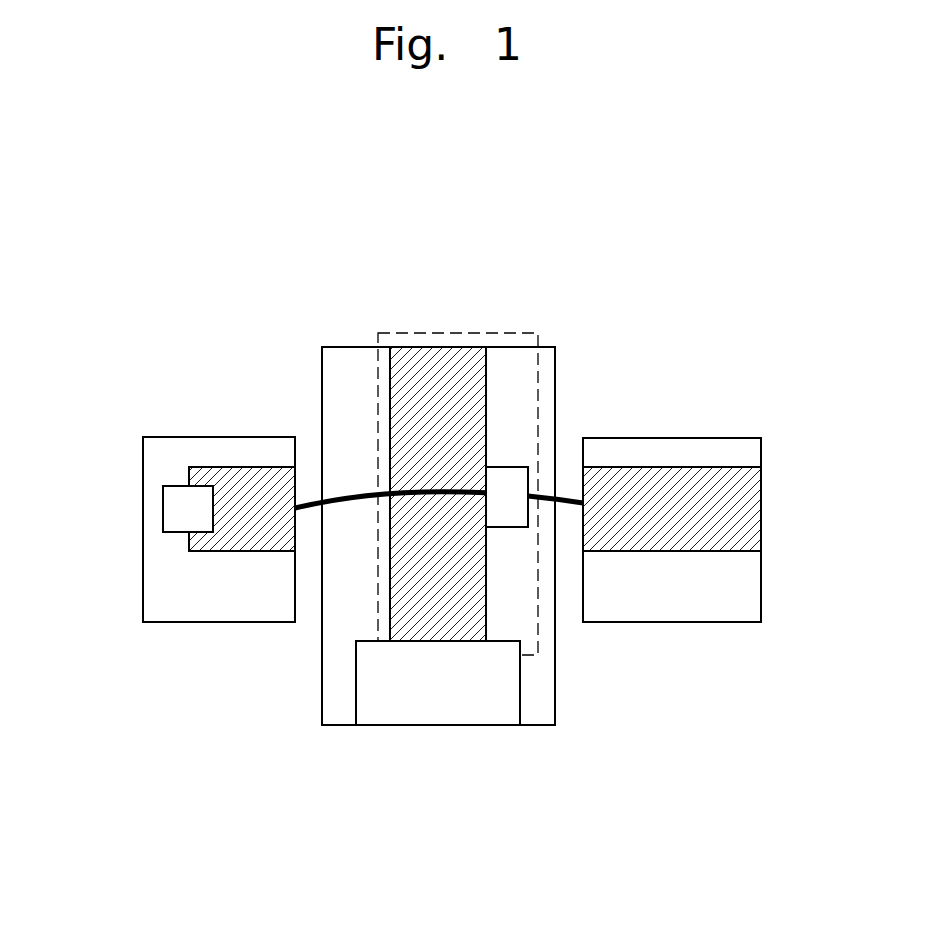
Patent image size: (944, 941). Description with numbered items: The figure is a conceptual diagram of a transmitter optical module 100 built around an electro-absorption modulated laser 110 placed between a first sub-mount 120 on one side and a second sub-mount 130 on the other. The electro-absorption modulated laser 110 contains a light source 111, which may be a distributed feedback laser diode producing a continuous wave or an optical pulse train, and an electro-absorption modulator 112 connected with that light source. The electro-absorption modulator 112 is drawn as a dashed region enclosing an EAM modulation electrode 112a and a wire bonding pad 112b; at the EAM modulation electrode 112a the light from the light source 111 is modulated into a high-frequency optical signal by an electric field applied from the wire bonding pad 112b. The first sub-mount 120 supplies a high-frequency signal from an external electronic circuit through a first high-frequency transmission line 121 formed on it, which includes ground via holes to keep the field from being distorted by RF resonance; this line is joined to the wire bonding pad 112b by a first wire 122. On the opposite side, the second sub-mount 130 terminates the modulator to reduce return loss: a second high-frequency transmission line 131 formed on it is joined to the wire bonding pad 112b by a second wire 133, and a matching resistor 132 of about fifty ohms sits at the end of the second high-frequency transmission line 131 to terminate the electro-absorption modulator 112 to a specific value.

The transmitter optical module 100 is at (760, 189).
The electro-absorption modulated laser 110 is at (323, 336).
The light source 111 is at (437, 727).
The electro-absorption modulator 112 is at (507, 333).
The EAM modulation electrode 112a is at (437, 357).
The wire bonding pad 112b is at (511, 517).
The first sub-mount 120 is at (780, 522).
The first high-frequency transmission line 121 is at (685, 485).
The first wire 122 is at (563, 493).
The second sub-mount 130 is at (134, 522).
The second high-frequency transmission line 131 is at (243, 483).
The matching resistor 132 is at (178, 494).
The second wire 133 is at (347, 493).